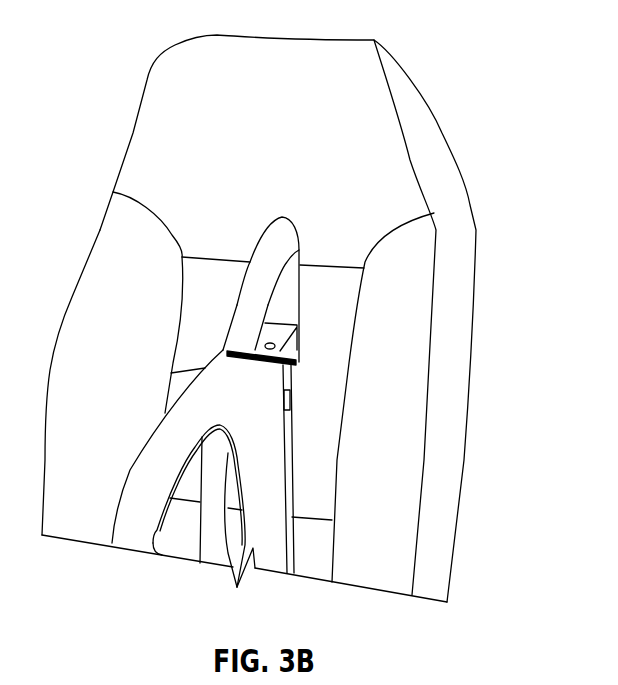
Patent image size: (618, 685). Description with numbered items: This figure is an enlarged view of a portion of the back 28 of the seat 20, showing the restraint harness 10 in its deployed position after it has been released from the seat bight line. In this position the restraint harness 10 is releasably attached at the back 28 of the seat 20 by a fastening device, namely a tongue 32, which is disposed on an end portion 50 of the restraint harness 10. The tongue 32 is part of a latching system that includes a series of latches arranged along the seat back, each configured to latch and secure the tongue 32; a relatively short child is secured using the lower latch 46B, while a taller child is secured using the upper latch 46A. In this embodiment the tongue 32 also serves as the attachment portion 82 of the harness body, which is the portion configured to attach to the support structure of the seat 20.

The restraint harness 10 is at (297, 565).
The seat 20 is at (409, 50).
The back 28 is at (288, 156).
The tongue 32 is at (258, 343).
The latch 46A is at (298, 326).
The lower latch 46B is at (293, 380).
The end portion 50 is at (178, 388).
The attachment portion 82 is at (300, 362).